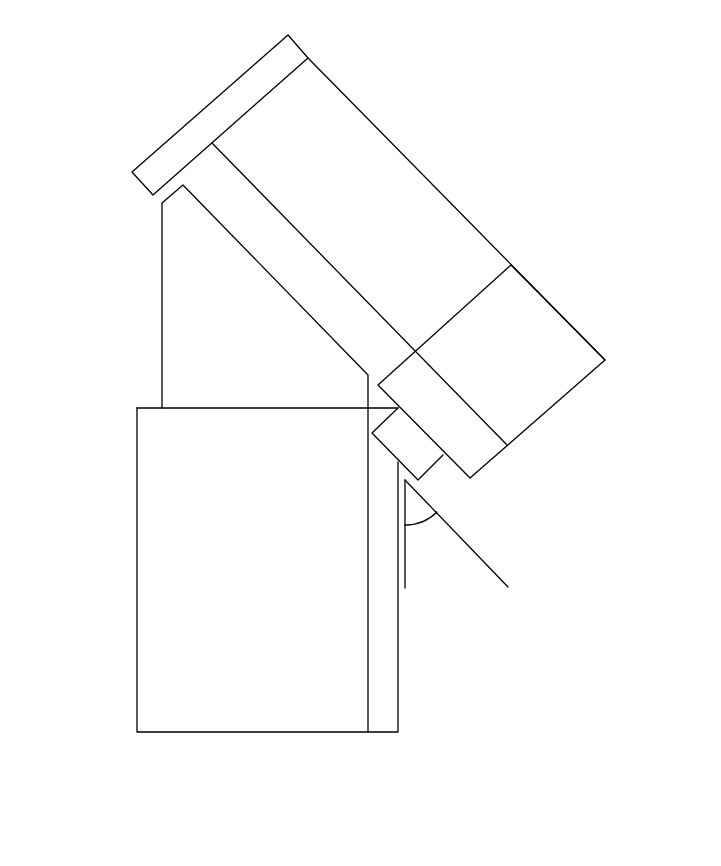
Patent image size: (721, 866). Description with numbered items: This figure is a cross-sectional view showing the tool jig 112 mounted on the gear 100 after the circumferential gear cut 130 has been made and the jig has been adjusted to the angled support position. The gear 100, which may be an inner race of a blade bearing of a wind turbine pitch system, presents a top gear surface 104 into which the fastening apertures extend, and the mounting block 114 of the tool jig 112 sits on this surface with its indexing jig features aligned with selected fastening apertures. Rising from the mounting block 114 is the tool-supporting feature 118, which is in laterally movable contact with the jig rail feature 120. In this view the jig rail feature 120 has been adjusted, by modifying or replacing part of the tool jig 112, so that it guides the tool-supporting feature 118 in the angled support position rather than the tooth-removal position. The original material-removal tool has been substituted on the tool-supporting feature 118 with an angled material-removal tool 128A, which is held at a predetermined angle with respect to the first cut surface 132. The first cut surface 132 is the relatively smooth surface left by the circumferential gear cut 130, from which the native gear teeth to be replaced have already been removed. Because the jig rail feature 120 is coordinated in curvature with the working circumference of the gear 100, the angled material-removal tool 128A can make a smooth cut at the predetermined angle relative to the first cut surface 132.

The gear 100 is at (99, 654).
The top gear surface 104 is at (150, 408).
The tool jig 112 is at (157, 106).
The mounting block 114 is at (180, 292).
The tool-supporting feature 118 is at (367, 190).
The jig rail feature 120 is at (150, 166).
The angled material-removal tool 128A is at (523, 347).
The circumferential gear cut 130 is at (414, 712).
The first cut surface 132 is at (368, 648).